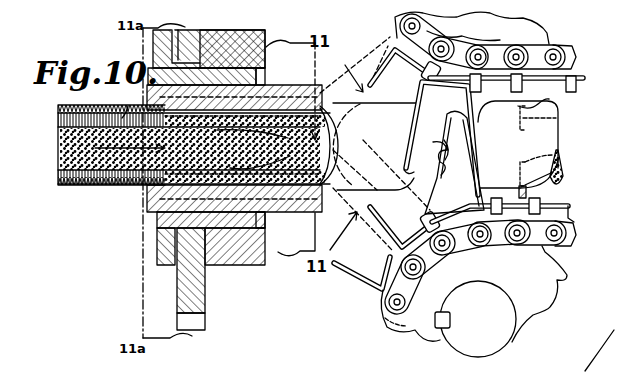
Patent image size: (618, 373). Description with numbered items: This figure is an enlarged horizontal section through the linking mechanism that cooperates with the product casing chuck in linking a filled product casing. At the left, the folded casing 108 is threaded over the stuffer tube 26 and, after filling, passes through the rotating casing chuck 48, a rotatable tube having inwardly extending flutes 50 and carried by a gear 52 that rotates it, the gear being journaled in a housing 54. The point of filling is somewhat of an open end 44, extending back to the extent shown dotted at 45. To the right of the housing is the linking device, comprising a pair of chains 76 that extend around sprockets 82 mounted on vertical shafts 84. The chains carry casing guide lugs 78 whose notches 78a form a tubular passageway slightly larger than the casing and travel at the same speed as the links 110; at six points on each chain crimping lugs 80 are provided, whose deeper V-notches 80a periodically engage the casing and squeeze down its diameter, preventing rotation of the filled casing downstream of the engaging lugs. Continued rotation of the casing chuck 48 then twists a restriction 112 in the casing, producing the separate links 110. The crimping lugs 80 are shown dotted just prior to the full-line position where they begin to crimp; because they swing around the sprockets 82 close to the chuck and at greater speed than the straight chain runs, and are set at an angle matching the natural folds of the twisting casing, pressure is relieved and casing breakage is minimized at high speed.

The stuffer tube 26 is at (74, 194).
The open end 44 is at (287, 136).
The dotted extent 45 is at (143, 148).
The casing chuck 48 is at (268, 226).
The flutes 50 is at (277, 86).
The gear 52 is at (200, 298).
The housing 54 is at (262, 40).
The chains 76 is at (546, 46).
The casing guide lugs 78 is at (383, 44).
The notches 78a is at (548, 101).
The crimping lugs 80 is at (421, 88).
The notches 80a is at (459, 162).
The sprockets 82 is at (492, 31).
The vertical shafts 84 is at (496, 349).
The folded casing 108 is at (128, 108).
The links 110 is at (555, 137).
The restriction 112 is at (437, 142).